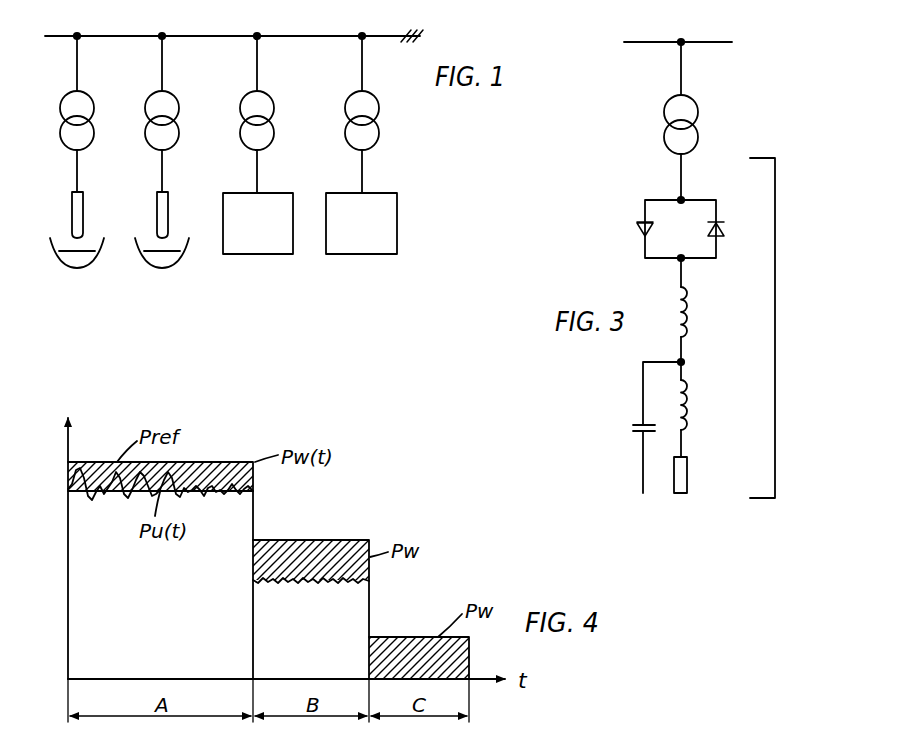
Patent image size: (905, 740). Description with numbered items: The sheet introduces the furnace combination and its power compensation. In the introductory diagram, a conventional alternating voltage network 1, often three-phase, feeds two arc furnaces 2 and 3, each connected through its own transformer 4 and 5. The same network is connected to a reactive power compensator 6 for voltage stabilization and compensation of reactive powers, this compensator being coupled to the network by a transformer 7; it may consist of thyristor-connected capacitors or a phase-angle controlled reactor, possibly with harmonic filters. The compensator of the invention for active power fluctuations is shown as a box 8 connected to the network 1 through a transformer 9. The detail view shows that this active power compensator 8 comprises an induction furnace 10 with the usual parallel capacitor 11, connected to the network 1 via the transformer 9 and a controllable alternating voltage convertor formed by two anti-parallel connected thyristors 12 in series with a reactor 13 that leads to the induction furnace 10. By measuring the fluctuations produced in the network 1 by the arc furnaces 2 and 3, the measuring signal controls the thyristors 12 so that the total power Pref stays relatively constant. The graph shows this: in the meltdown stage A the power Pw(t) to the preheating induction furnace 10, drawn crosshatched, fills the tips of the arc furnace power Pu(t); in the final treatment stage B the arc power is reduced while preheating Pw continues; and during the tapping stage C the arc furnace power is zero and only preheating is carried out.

In FIG. 1, the alternating voltage network 1 is at (303, 36).
In FIG. 1, the arc furnace 2 is at (94, 262).
In FIG. 1, the arc furnace 3 is at (179, 262).
In FIG. 1, the transformer 4 is at (93, 100).
In FIG. 1, the transformer 5 is at (178, 100).
In FIG. 1, the reactive power compensator 6 is at (260, 254).
In FIG. 1, the transformer 7 is at (273, 100).
In FIG. 1, the active power compensator 8 is at (362, 254).
In FIG. 3, the active power compensator 8 is at (777, 313).
In FIG. 1, the transformer 9 is at (378, 100).
In FIG. 3, the transformer 9 is at (695, 104).
In FIG. 3, the induction furnace 10 is at (700, 378).
In FIG. 3, the parallel capacitor 11 is at (638, 423).
In FIG. 3, the anti-parallel connected thyristors 12 is at (716, 196).
In FIG. 3, the reactor 13 is at (689, 316).